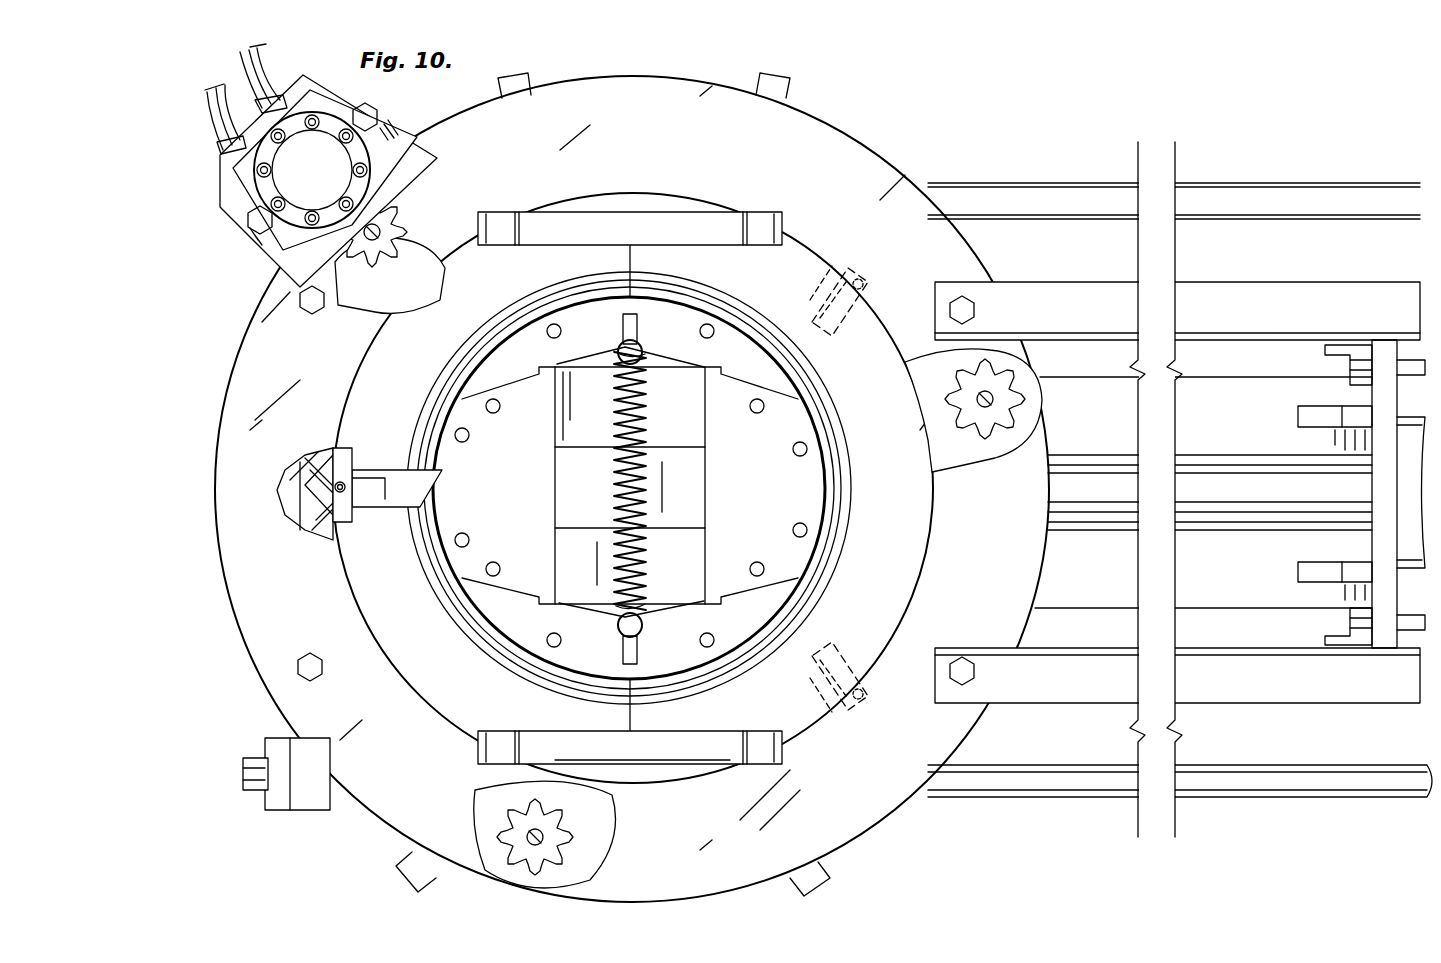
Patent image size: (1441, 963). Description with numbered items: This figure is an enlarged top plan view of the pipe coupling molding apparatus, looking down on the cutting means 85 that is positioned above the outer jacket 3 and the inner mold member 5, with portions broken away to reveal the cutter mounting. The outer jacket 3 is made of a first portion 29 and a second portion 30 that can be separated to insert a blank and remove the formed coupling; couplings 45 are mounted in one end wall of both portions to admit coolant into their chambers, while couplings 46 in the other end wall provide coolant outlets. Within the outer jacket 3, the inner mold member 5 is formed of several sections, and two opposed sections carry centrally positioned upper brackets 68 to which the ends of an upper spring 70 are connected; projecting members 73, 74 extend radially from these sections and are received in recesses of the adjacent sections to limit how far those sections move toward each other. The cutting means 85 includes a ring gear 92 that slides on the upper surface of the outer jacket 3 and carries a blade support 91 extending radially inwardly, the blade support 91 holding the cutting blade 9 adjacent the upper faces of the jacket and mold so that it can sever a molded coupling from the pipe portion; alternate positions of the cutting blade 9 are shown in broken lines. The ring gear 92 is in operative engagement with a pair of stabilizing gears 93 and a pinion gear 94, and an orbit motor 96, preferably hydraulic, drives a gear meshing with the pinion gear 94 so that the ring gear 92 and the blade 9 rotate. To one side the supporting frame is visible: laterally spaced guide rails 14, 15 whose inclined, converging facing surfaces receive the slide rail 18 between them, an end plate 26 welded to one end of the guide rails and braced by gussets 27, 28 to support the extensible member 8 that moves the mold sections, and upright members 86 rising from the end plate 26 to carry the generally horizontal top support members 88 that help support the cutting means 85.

The outer jacket 3 is at (675, 752).
The inner mold member 5 is at (686, 323).
The extensible member 8 is at (1232, 530).
The cutting blade 9 is at (372, 470).
The guide rail 14 is at (1080, 392).
The guide rail 15 is at (1088, 612).
The slide rail 18 is at (630, 482).
The end plate 26 is at (1392, 396).
The gusset 27 is at (1350, 406).
The gusset 28 is at (1350, 562).
The first portion 29 is at (393, 343).
The second portion 30 is at (836, 706).
The couplings 45 is at (520, 738).
The couplings 46 is at (520, 236).
The upper bracket 68 is at (623, 328).
The upper spring 70 is at (648, 430).
The projecting member 73 is at (648, 372).
The projecting member 74 is at (648, 604).
The cutting means 85 is at (208, 562).
The upright members 86 is at (1336, 350).
The top support members 88 is at (1286, 300).
The blade support 91 is at (338, 448).
The ring gear 92 is at (304, 530).
The stabilizing gears 93 is at (988, 445).
The pinion gear 94 is at (372, 290).
The orbit motor 96 is at (240, 198).